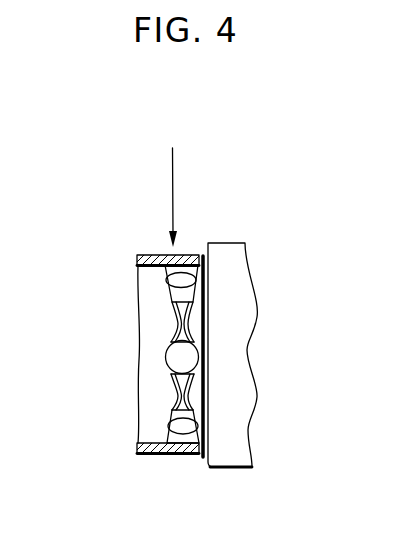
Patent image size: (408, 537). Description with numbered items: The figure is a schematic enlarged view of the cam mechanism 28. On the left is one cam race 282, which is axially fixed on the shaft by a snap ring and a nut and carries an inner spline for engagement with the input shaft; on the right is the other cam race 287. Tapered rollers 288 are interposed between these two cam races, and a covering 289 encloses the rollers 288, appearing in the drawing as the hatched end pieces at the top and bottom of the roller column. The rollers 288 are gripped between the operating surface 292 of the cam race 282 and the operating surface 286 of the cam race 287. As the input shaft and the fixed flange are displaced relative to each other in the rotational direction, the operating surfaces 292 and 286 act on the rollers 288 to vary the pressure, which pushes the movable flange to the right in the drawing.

The cam mechanism 28 is at (171, 182).
The cam race 282 is at (140, 288).
The operating surface 286 is at (204, 331).
The other cam race 287 is at (240, 292).
The tapered rollers 288 is at (199, 258).
The covering 289 is at (153, 255).
The operating surface 292 is at (178, 326).